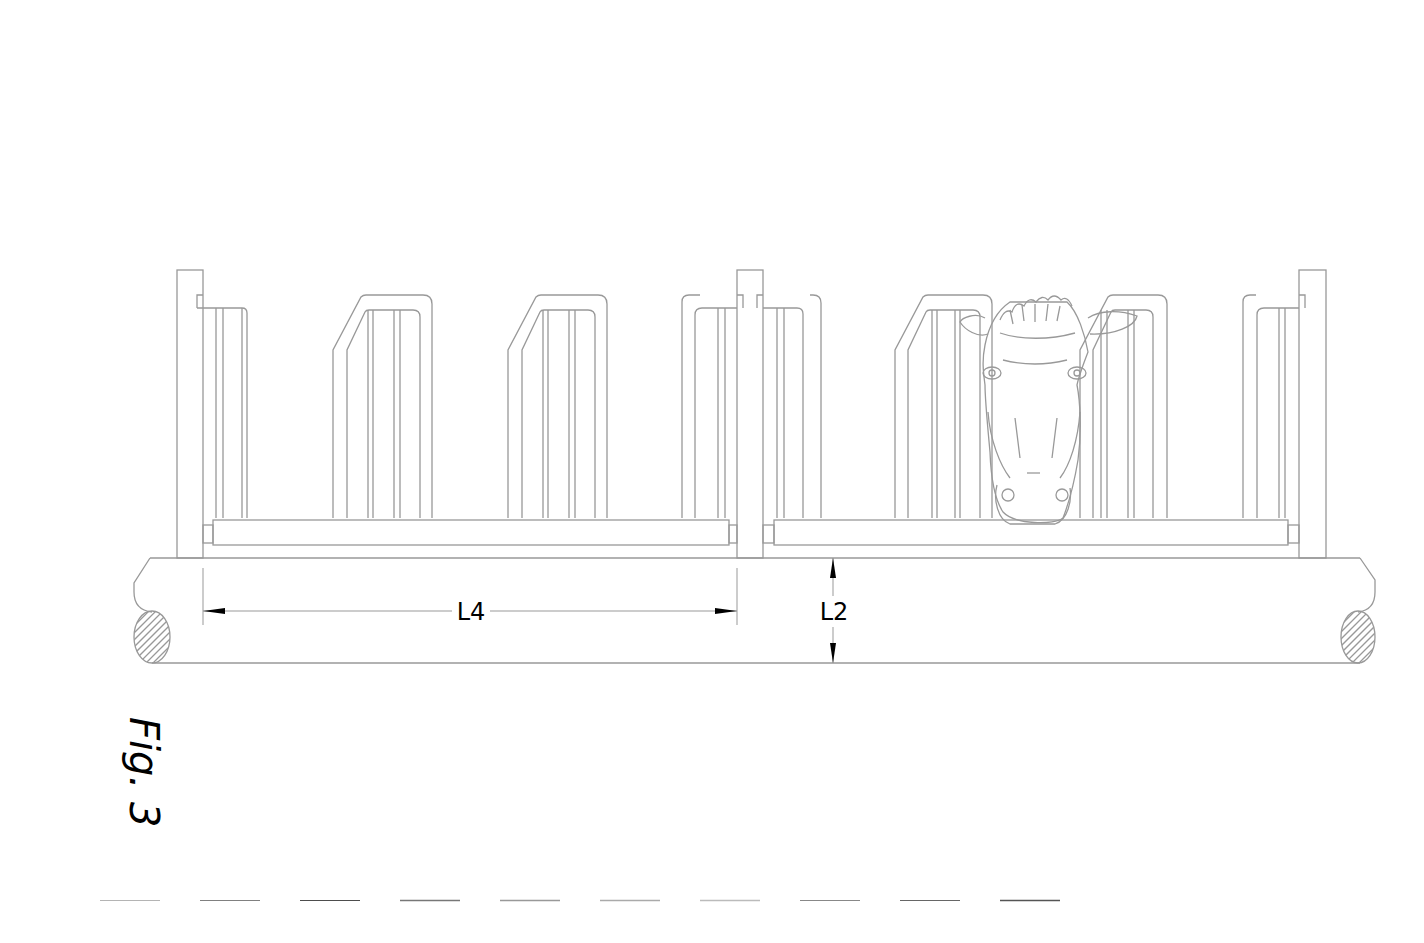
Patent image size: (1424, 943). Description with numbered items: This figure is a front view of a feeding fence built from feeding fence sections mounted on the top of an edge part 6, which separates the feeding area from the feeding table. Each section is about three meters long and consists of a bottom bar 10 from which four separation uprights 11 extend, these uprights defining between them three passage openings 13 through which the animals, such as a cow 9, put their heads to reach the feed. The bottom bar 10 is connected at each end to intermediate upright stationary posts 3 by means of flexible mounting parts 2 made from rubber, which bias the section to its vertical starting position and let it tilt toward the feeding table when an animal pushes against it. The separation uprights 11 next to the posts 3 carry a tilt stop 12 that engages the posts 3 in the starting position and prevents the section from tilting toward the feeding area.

The flexible mounting part 2 is at (211, 530).
The upright stationary post 3 is at (187, 271).
The edge part 6 is at (1030, 630).
The cow 9 is at (1073, 303).
The bottom bar 10 is at (430, 535).
The separation uprights 11 is at (251, 297).
The tilt stop 12 is at (213, 302).
The passage openings for the heads of animals 13 is at (284, 426).